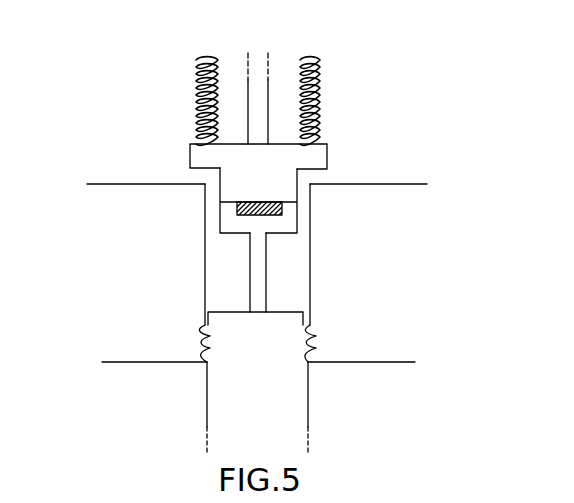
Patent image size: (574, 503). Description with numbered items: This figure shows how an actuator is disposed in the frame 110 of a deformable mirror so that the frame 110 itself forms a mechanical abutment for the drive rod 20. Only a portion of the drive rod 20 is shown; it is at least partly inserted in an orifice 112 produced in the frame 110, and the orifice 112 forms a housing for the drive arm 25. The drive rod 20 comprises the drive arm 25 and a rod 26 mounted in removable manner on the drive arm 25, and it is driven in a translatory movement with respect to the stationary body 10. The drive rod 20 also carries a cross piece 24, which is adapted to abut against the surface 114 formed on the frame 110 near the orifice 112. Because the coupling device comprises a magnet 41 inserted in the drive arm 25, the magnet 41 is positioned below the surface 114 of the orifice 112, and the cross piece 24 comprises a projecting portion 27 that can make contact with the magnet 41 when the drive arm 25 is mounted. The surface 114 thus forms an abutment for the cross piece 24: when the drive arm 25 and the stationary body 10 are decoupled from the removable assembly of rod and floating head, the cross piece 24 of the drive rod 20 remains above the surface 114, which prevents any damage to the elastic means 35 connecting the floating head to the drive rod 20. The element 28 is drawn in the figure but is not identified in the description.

The stationary body 10 is at (223, 387).
The drive rod 20 is at (298, 247).
The cross piece 24 is at (318, 155).
The drive arm 25 is at (257, 250).
The rod 26 is at (257, 118).
The projecting portion 27 is at (282, 188).
The inner block / neck 28 is at (316, 174).
The second elastic means 35 is at (218, 98).
The magnet 41 is at (237, 210).
The frame 110 is at (423, 278).
The orifice 112 is at (225, 288).
The surface 114 is at (174, 184).